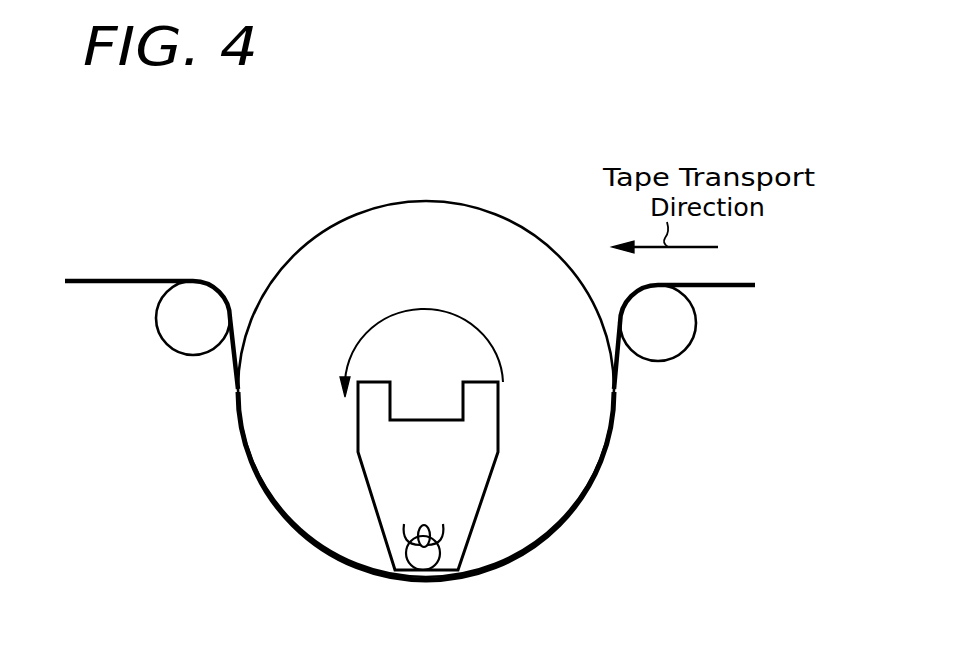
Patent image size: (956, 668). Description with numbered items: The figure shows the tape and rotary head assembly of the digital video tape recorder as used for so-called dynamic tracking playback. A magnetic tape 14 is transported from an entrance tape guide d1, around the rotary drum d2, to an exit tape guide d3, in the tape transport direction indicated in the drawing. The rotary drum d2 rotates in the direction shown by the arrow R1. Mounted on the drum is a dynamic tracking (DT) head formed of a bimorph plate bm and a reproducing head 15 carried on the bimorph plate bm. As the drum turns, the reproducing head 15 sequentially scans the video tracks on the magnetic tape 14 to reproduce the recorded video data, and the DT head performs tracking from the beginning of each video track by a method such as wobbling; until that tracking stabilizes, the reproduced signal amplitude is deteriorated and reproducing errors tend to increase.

The magnetic tape 14 is at (118, 279).
The reproducing head 15 is at (455, 547).
The rotary drum d2 is at (368, 202).
The exit tape guide d3 is at (175, 357).
The entrance tape guide d1 is at (655, 362).
The bimorph plate bm is at (387, 488).
The arrow indicating drum rotation direction R1 is at (430, 307).